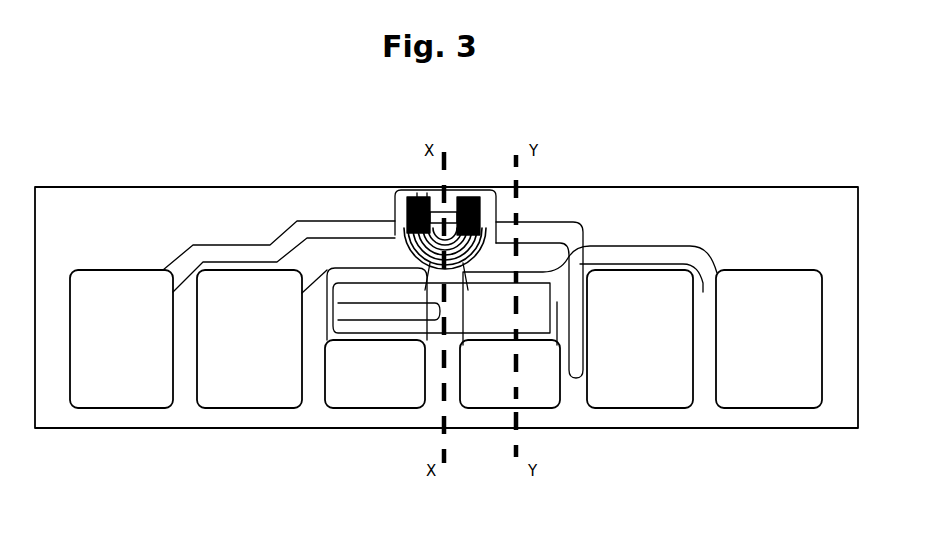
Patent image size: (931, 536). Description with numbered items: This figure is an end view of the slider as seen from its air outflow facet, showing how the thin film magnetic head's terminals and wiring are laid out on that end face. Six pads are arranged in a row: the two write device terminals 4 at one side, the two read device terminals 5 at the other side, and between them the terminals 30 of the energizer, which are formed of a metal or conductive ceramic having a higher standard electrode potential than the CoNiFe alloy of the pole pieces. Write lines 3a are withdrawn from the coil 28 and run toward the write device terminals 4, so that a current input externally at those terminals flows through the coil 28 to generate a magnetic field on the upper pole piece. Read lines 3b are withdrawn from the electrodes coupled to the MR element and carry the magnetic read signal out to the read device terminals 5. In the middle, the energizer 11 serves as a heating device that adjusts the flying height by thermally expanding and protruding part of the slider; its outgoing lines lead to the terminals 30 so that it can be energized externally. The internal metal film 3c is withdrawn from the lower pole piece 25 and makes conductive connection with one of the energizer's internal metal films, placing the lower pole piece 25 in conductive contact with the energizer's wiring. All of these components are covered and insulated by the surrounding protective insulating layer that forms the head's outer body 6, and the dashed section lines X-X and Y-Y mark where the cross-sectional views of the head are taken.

The substrate 6 is at (81, 187).
The write lines 3a is at (335, 265).
The read lines 3b is at (543, 331).
The internal metal film 3c is at (553, 231).
The write device terminals 4 is at (117, 375).
The read device terminals 5 is at (620, 395).
The terminals of the energizer 30 is at (357, 395).
The coil 28 is at (412, 248).
The lower pole piece 25 is at (497, 200).
The energizer 11 is at (528, 218).